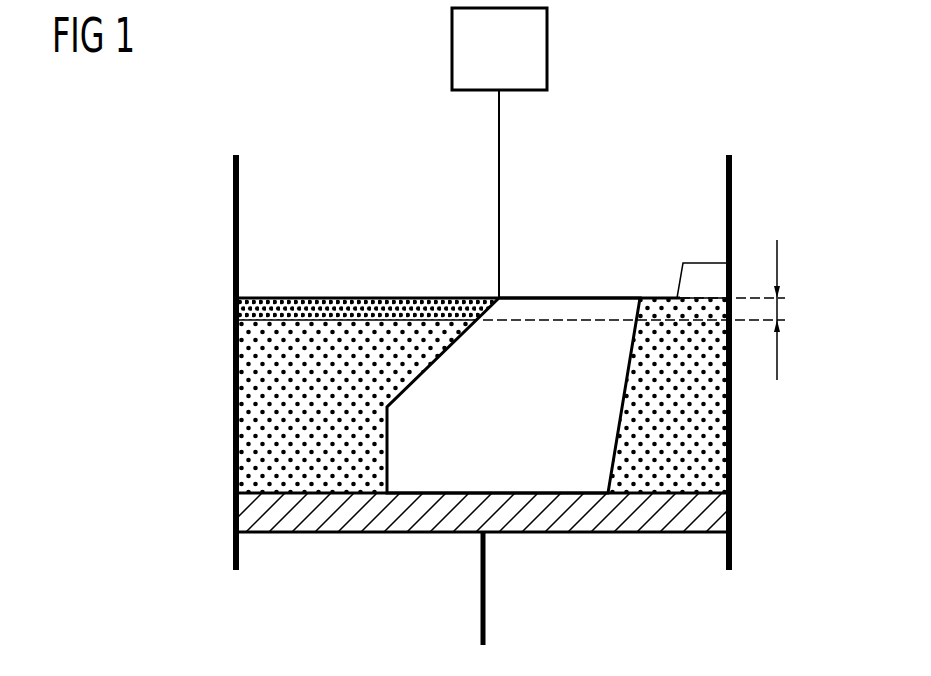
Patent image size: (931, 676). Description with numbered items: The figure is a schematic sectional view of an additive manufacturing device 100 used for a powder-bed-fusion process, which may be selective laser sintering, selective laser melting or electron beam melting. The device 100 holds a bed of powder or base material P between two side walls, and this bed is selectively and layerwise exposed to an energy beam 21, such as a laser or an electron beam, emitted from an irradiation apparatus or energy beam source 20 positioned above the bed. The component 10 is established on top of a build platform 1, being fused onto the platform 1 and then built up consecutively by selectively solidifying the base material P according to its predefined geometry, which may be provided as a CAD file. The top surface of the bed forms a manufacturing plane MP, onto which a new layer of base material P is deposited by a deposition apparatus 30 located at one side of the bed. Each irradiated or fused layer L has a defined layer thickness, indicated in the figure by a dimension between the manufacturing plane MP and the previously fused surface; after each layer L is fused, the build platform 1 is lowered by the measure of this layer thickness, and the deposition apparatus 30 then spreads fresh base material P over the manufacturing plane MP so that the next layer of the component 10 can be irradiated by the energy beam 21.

The additive manufacturing device 100 is at (279, 80).
The energy beam source 20 is at (547, 44).
The energy beam 21 is at (500, 137).
The deposition apparatus 30 is at (707, 277).
The manufacturing plane MP is at (364, 284).
The powder or base material P is at (713, 420).
The component 10 is at (550, 467).
The build platform 1 is at (715, 513).
The layer L is at (778, 305).